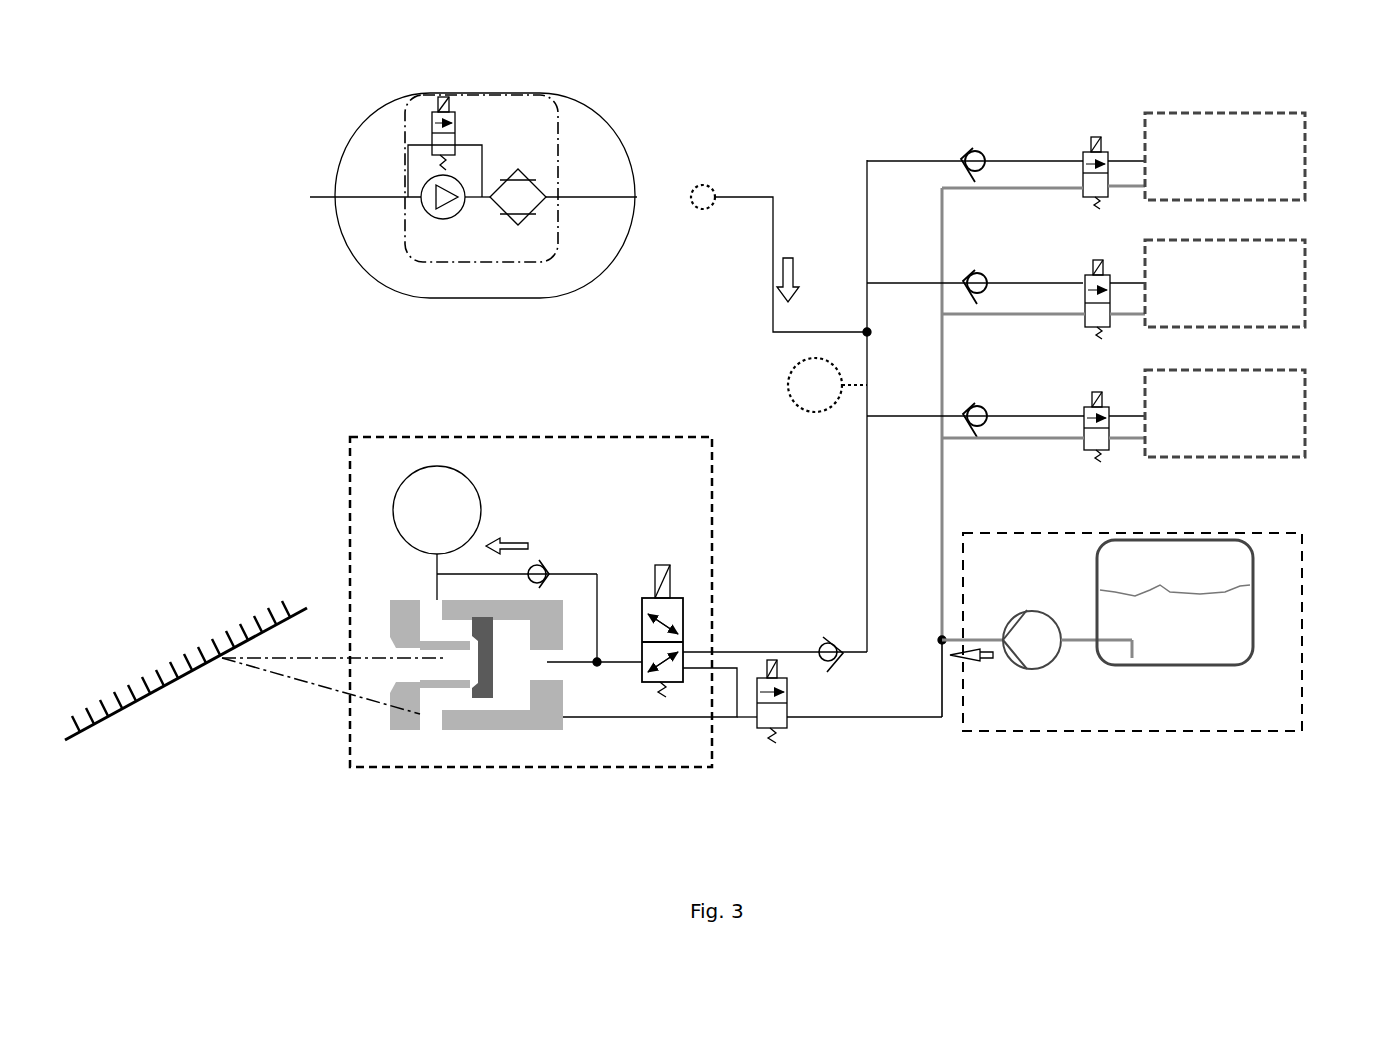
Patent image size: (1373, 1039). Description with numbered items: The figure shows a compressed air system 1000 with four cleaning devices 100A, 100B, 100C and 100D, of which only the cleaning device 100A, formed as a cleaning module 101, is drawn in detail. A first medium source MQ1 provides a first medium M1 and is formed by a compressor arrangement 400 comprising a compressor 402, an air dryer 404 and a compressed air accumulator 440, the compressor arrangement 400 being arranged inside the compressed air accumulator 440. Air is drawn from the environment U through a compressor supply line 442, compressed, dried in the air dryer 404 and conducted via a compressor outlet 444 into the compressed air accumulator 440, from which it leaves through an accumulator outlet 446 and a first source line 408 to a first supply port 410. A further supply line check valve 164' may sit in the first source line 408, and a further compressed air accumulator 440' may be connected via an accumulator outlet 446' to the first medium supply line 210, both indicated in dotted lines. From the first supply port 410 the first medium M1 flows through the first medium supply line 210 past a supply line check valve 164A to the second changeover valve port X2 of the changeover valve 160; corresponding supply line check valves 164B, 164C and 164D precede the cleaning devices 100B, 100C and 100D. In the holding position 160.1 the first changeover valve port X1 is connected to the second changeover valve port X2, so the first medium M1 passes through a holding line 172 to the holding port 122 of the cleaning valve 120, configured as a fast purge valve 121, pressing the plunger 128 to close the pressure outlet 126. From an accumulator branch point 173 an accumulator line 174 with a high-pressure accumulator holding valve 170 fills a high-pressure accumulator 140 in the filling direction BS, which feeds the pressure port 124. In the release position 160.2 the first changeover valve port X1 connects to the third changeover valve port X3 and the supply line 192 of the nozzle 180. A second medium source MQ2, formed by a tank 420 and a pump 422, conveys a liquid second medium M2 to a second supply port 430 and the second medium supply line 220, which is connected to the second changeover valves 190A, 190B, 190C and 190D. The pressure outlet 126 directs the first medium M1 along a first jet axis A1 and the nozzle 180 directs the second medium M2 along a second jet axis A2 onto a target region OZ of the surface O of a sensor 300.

The compressed air system 1000 is at (176, 41).
The first medium source MQ1 is at (380, 95).
The compressed air accumulator 440 is at (515, 139).
The compressor supply line 442 is at (318, 197).
The compressor outlet 444 is at (568, 197).
The accumulator outlet 446 is at (665, 169).
The compressor arrangement 400 is at (405, 232).
The compressor 402 is at (443, 226).
The air dryer 404 is at (522, 228).
The environment U is at (308, 218).
The first medium M1 is at (822, 212).
The first source line 408 is at (745, 197).
The further supply line check valve 164' is at (712, 225).
The first supply port 410 is at (867, 330).
The cleaning device 100A is at (680, 355).
The cleaning module 101 is at (680, 436).
The further compressed air accumulator 440' is at (802, 374).
The accumulator outlet 446' is at (899, 367).
The first medium supply line 210 is at (867, 437).
The supply line check valve 164B is at (967, 148).
The second changeover valve 190B is at (1083, 205).
The cleaning device 100B is at (1187, 103).
The supply line check valve 164C is at (967, 270).
The second changeover valve 190C is at (1085, 330).
The cleaning device 100C is at (1322, 268).
The supply line check valve 164D is at (967, 403).
The second changeover valve 190D is at (1085, 452).
The cleaning device 100D is at (1322, 388).
The second supply port 430 is at (942, 636).
The pump 422 is at (1050, 620).
The tank 420 is at (1240, 665).
The second medium M2 is at (1117, 660).
The second medium source MQ2 is at (1194, 735).
The high-pressure accumulator 140 is at (395, 500).
The high-pressure accumulator holding valve 170 is at (540, 562).
The filling direction BS is at (513, 540).
The accumulator line 174 is at (590, 566).
The holding line 172 is at (612, 652).
The first changeover valve port X1 is at (631, 580).
The changeover valve 160 is at (690, 577).
The release position 160.2 is at (683, 618).
The holding position 160.1 is at (683, 634).
The second changeover valve port X2 is at (683, 650).
The third changeover valve port X3 is at (640, 692).
The supply line check valve 164A is at (838, 668).
The second changeover valve 190A is at (772, 748).
The second medium supply line 220 is at (795, 728).
The cleaning valve 120 is at (400, 667).
The pressure port 124 is at (416, 590).
The fast purge valve 121 is at (530, 705).
The plunger 128 is at (487, 698).
The pressure outlet 126 is at (398, 647).
The holding port 122 is at (568, 670).
The accumulator branch point 173 is at (602, 668).
The supply line 192 is at (583, 720).
The sensor 300 is at (158, 632).
The first jet axis A1 is at (330, 655).
The second jet axis A2 is at (337, 693).
The target region OZ is at (228, 665).
The surface O is at (138, 708).
The nozzle 180 is at (372, 707).